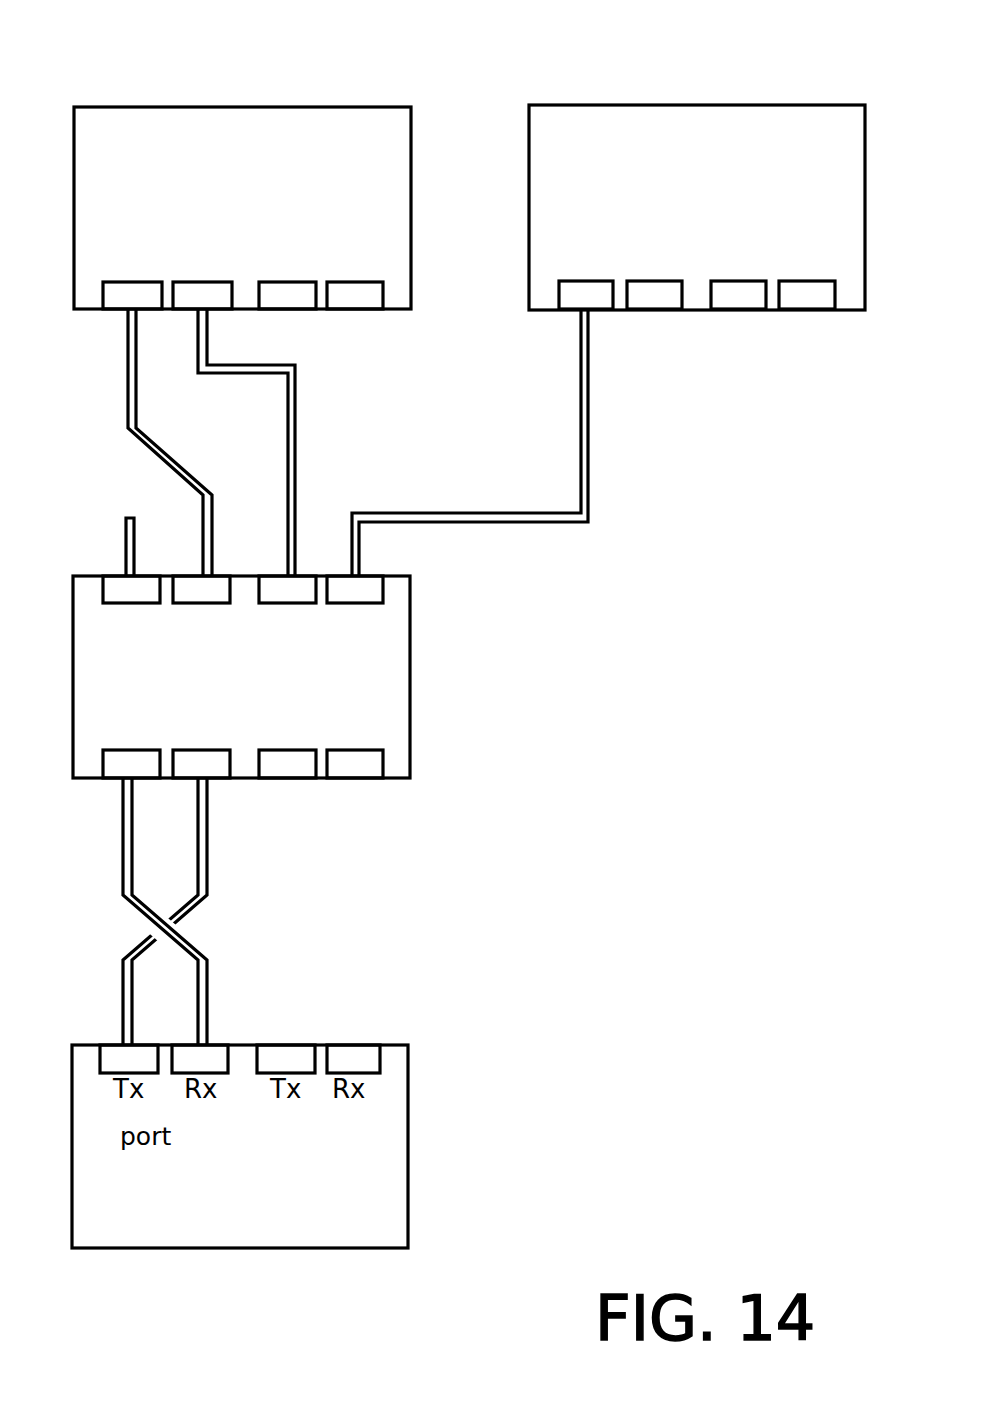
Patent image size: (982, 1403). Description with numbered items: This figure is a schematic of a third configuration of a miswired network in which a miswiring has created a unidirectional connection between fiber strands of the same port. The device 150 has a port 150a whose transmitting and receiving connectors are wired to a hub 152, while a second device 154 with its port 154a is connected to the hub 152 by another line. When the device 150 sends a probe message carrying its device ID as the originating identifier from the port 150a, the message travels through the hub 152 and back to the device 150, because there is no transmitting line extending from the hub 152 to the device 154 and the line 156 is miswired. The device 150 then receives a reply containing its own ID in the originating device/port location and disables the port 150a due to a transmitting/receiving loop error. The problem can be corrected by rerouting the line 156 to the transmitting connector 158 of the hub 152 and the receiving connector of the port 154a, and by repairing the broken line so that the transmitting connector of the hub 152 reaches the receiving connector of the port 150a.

The device 150 is at (242, 167).
The port 150a is at (171, 254).
The hub 152 is at (410, 678).
The device 154 is at (697, 167).
The port 154a is at (630, 254).
The line 156 is at (295, 392).
The transmitting connector 158 is at (305, 578).